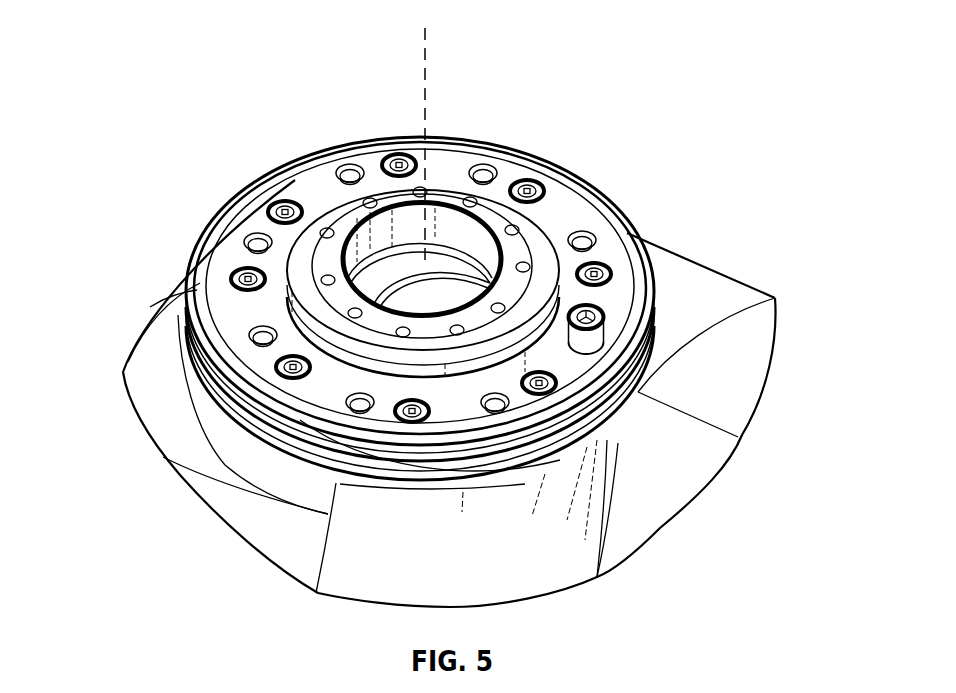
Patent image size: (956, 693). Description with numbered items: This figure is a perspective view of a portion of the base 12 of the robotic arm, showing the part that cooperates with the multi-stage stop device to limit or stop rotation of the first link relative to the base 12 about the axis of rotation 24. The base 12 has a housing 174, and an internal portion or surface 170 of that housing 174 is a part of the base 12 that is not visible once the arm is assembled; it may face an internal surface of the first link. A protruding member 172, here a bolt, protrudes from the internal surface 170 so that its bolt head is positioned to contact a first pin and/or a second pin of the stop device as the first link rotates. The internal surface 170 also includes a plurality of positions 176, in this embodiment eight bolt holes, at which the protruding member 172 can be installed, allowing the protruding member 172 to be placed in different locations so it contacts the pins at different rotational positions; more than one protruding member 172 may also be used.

The base 12 is at (734, 287).
The axis of rotation 24 is at (423, 63).
The internal portion or surface 170 is at (305, 186).
The protruding member 172 is at (582, 312).
The housing 174 is at (661, 256).
The positions 176 is at (350, 163).